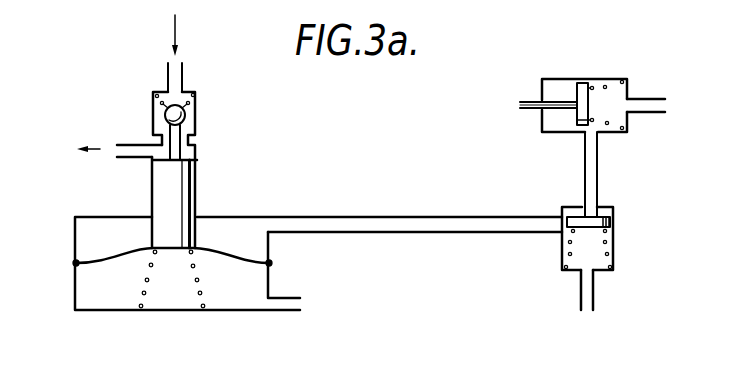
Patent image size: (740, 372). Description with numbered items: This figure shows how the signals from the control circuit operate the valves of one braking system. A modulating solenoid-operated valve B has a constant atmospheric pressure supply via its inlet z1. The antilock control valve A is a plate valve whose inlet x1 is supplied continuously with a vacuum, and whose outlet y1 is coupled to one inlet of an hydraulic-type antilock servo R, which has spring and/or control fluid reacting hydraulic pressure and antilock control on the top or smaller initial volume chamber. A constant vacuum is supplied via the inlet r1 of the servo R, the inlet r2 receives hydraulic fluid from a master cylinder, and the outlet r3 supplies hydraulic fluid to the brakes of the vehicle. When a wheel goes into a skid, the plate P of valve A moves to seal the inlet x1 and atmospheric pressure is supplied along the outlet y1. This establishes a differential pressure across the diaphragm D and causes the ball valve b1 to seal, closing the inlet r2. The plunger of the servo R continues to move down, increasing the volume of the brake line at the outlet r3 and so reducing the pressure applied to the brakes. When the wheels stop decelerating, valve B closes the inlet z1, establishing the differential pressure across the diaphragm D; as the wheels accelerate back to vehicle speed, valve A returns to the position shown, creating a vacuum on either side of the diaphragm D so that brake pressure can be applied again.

The inlet r2 is at (172, 80).
The ball valve b1 is at (187, 117).
The outlet r3 is at (134, 149).
The antilock servo R is at (199, 193).
The diaphragm D is at (78, 262).
The inlet r1 is at (283, 307).
The modulating solenoid-operated valve B is at (603, 78).
The inlet z1 is at (647, 107).
The outlet y1 is at (563, 224).
The plate P is at (610, 220).
The antilock control valve A is at (614, 247).
The inlet x1 is at (582, 295).